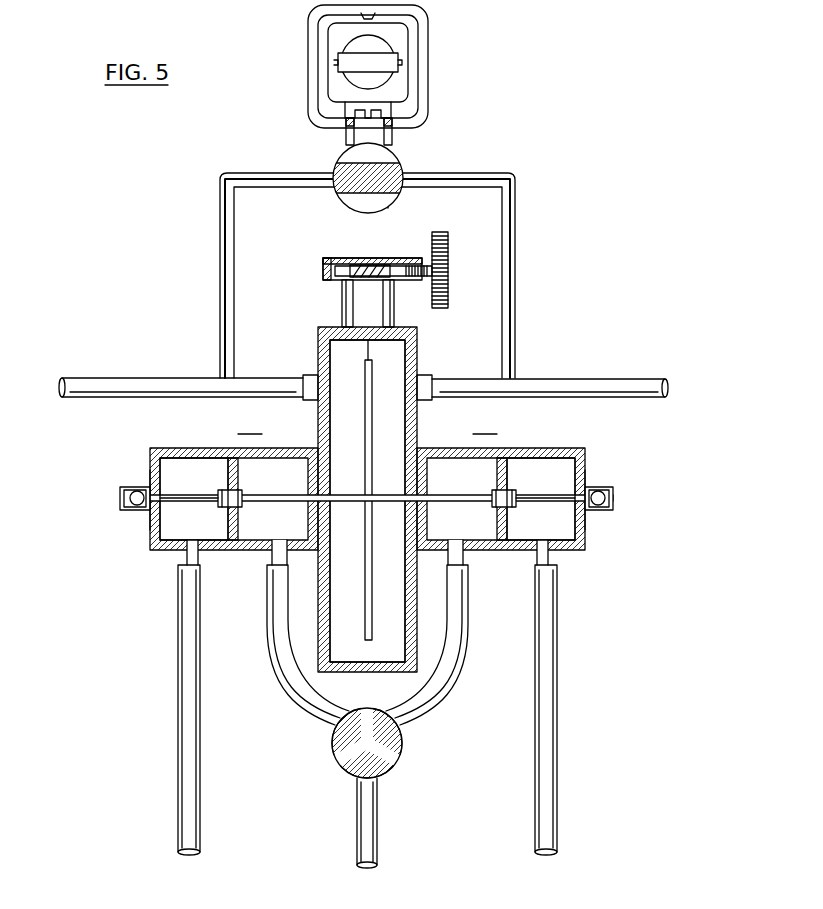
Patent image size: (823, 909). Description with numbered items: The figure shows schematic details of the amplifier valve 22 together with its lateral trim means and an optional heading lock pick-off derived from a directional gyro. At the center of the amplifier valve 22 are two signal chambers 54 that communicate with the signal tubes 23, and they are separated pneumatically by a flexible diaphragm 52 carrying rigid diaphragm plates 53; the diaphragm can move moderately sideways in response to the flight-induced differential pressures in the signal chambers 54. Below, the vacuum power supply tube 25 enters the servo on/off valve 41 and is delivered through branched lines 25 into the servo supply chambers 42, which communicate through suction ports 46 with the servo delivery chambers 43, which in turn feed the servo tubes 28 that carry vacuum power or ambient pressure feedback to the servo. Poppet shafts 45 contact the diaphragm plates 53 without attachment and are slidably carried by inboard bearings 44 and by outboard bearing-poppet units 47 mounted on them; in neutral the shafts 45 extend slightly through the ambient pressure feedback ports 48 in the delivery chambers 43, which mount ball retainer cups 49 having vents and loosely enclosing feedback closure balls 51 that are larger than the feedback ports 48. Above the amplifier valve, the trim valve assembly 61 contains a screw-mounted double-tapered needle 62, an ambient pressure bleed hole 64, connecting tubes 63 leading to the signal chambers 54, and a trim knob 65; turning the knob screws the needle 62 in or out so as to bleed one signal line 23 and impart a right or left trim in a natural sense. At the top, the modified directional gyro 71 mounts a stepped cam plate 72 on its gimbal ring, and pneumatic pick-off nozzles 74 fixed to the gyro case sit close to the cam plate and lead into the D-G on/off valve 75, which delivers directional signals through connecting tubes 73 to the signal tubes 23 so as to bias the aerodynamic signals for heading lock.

The modified directional gyro 71 is at (430, 47).
The stepped cam plate 72 is at (400, 110).
The pneumatic pick-off nozzles 74 is at (345, 146).
The D-G on/off valve 75 is at (405, 170).
The connecting tubes 73 is at (220, 258).
The trim valve assembly 61 is at (335, 259).
The double-tapered needle 62 is at (396, 264).
The ambient pressure bleed hole 64 is at (360, 264).
The trim knob 65 is at (448, 243).
The connecting tubes 63 is at (342, 313).
The flexible diaphragm 52 is at (368, 348).
The signal chambers 54 is at (343, 372).
The rigid diaphragm plates 53 is at (318, 440).
The signal tubes 23 is at (80, 378).
The amplifier valve 22 is at (367, 480).
The suction ports 46 is at (222, 490).
The servo supply chambers 42 is at (255, 552).
The inboard bearings 44 is at (268, 495).
The poppet shafts 45 is at (218, 492).
The outboard bearing-poppet units 47 is at (215, 495).
The feedback closure balls 51 is at (122, 488).
The ball retainer cups 49 is at (133, 492).
The ambient pressure feedback ports 48 is at (150, 512).
The servo delivery chambers 43 is at (172, 525).
The servo tubes 28 is at (178, 755).
The vacuum power supply tube 25 is at (300, 718).
The servo on/off valve 41 is at (350, 775).